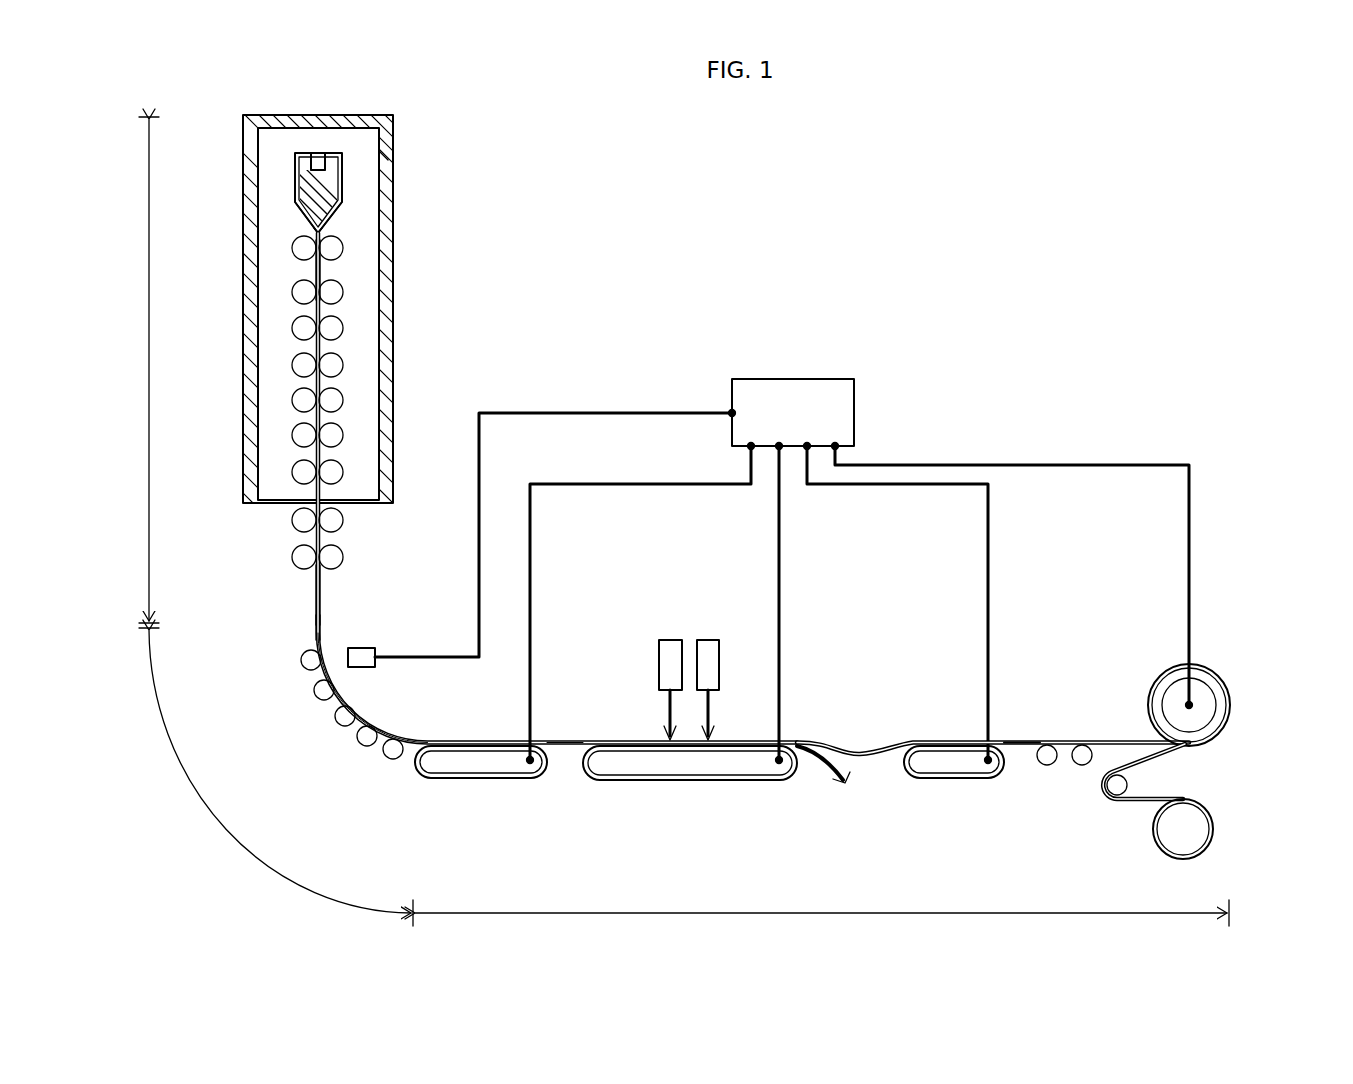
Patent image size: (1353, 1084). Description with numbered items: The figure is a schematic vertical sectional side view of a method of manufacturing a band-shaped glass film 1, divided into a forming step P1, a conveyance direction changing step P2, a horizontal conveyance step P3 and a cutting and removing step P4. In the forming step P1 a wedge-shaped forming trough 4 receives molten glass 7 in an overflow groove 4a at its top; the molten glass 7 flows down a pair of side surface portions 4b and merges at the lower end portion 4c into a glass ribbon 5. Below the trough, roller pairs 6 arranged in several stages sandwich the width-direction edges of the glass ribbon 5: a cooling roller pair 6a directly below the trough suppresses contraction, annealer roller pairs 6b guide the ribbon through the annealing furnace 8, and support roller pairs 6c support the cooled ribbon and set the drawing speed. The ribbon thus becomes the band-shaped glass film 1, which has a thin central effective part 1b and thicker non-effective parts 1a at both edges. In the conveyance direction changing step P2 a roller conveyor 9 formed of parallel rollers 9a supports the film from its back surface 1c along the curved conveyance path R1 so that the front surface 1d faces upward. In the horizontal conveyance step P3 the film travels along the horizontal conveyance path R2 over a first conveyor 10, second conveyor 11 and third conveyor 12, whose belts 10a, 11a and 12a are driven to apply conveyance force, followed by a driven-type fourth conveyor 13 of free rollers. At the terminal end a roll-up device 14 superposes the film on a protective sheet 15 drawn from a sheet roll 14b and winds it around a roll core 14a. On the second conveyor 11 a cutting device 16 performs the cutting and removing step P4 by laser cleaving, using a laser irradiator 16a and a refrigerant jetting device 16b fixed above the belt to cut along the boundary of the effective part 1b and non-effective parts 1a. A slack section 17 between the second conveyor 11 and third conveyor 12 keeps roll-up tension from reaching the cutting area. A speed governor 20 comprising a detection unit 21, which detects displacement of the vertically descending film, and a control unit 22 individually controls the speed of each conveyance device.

The band-shaped glass film 1 is at (498, 488).
The non-effective parts 1a is at (812, 772).
The effective part 1b is at (1018, 749).
The back surface 1c is at (314, 633).
The front surface 1d is at (322, 590).
The forming trough 4 is at (315, 166).
The overflow groove 4a is at (322, 158).
The side surface portions 4b is at (300, 212).
The lower end portion 4c is at (316, 232).
The glass ribbon 5 is at (318, 272).
The roller pairs 6 is at (384, 402).
The cooling roller pair 6a is at (340, 248).
The annealer roller pairs 6b is at (338, 328).
The support roller pairs 6c is at (338, 557).
The molten glass 7 is at (314, 158).
The annealing furnace 8 is at (233, 269).
The roller conveyor 9 is at (329, 730).
The rollers 9a is at (318, 690).
The first conveyor 10 is at (481, 802).
The belt 10a is at (500, 779).
The second conveyor 11 is at (690, 804).
The belt 11a is at (655, 781).
The third conveyor 12 is at (941, 789).
The belt 12a is at (960, 779).
The fourth conveyor 13 is at (1065, 778).
The roll-up device 14 is at (1187, 766).
The roll core 14a is at (1172, 695).
The sheet roll 14b is at (1210, 862).
The protective sheet 15 is at (1148, 800).
The cutting device 16 is at (700, 645).
The laser irradiator 16a is at (670, 640).
The refrigerant jetting device 16b is at (712, 640).
The slack section 17 is at (863, 748).
The speed governor 20 is at (784, 536).
The detection unit 21 is at (368, 646).
The control unit 22 is at (856, 405).
The forming step P1 is at (137, 370).
The conveyance direction changing step P2 is at (276, 777).
The horizontal conveyance step P3 is at (822, 921).
The cutting and removing step P4 is at (700, 645).
The curved conveyance path R1 is at (368, 705).
The horizontal conveyance path R2 is at (561, 740).